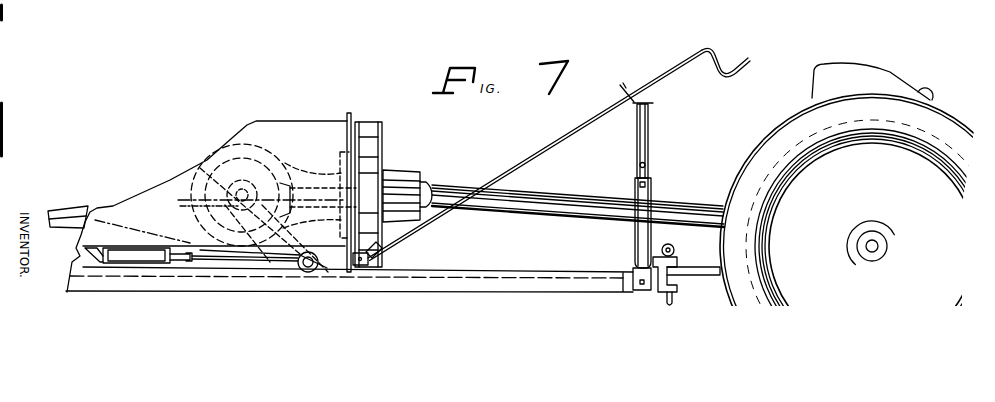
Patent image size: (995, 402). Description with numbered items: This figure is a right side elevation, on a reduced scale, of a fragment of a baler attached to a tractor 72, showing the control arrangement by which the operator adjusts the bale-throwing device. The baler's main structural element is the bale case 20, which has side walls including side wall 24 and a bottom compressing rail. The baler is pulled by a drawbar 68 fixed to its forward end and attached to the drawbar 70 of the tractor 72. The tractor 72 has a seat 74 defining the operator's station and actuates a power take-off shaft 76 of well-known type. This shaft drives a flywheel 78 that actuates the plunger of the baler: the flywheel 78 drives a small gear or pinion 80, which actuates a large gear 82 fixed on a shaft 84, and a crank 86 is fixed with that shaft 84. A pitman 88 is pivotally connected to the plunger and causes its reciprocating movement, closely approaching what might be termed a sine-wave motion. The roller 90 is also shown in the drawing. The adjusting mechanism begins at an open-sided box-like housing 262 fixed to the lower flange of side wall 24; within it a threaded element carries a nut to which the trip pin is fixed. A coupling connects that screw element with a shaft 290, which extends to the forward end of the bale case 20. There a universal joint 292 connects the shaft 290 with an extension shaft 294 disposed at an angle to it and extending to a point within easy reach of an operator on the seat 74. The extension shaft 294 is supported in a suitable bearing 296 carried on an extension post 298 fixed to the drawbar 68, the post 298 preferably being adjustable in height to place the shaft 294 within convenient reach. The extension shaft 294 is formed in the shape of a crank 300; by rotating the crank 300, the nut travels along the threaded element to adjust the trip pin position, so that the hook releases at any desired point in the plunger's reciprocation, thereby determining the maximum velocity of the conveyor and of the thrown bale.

The bale case 20 is at (287, 117).
The side wall 24 is at (289, 138).
The drawbar 68 is at (567, 285).
The drawbar 70 is at (710, 269).
The tractor 72 is at (948, 66).
The seat 74 is at (893, 79).
The power take-off shaft 76 is at (673, 210).
The flywheel 78 is at (375, 146).
The pinion 80 is at (290, 157).
The large gear 82 is at (223, 141).
The shaft 84 is at (207, 166).
The crank 86 is at (207, 190).
The pitman 88 is at (68, 214).
The roller 90 is at (310, 273).
The housing 262 is at (138, 268).
The shaft 290 is at (210, 255).
The universal joint 292 is at (362, 268).
The extension shaft 294 is at (521, 168).
The bearing 296 is at (637, 89).
The extension post 298 is at (643, 138).
The crank 300 is at (736, 64).